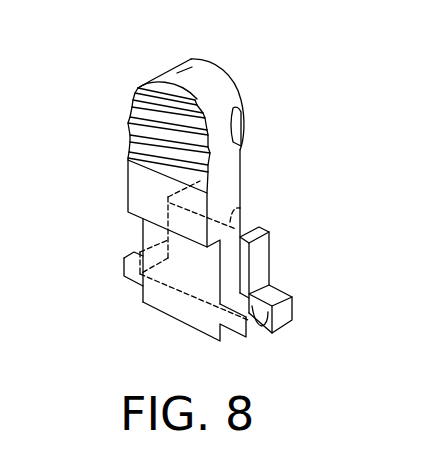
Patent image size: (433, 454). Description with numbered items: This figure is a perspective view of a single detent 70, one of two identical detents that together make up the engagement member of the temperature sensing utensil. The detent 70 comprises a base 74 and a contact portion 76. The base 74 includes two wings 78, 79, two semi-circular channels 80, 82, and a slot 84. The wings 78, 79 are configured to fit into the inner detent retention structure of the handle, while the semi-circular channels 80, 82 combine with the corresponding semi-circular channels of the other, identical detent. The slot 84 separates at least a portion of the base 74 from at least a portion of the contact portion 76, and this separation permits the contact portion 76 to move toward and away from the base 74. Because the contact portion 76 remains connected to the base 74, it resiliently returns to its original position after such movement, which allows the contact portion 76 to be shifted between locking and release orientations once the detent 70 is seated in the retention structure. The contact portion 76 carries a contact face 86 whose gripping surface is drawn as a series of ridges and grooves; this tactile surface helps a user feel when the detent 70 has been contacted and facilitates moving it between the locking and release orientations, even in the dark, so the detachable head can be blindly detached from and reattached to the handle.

The detent 70 is at (137, 71).
The base 74 is at (271, 262).
The contact portion 76 is at (216, 89).
The wing 78 is at (124, 262).
The wing 79 is at (290, 319).
The semi-circular channel 80 is at (212, 208).
The semi-circular channel 82 is at (252, 232).
The slot 84 is at (267, 320).
The contact face 86 is at (137, 129).